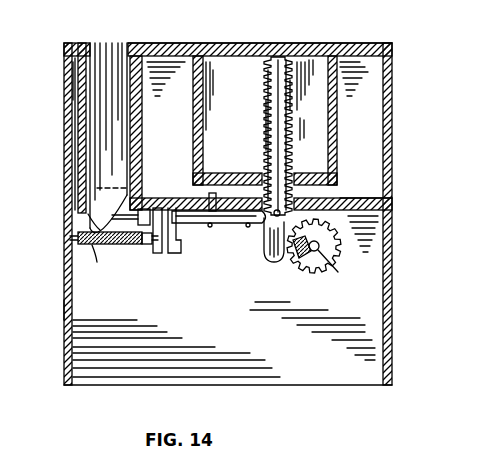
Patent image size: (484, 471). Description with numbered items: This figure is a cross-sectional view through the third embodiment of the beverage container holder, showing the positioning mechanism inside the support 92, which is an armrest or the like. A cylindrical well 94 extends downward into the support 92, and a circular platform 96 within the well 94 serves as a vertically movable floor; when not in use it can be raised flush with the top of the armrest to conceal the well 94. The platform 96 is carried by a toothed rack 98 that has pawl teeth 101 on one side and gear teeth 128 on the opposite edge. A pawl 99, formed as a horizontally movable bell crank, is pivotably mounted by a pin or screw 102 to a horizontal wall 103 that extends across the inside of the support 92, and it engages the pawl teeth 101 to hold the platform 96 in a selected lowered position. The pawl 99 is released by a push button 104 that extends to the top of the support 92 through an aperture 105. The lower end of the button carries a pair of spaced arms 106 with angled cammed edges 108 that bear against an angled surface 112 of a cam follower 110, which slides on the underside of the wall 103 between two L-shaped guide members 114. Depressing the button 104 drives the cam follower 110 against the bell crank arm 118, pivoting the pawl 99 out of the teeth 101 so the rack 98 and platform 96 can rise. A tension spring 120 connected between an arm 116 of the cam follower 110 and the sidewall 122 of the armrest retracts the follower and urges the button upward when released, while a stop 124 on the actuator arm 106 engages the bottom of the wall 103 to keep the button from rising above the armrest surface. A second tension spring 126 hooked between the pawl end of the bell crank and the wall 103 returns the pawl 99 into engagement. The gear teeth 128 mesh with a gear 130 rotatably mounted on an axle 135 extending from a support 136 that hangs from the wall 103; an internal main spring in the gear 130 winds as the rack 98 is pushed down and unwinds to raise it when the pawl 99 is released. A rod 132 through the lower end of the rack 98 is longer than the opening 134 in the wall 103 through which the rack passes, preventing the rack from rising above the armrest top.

The support 92 is at (394, 183).
The well 94 is at (316, 118).
The platform 96 is at (300, 45).
The toothed rack 98 is at (266, 78).
The pawl 99 is at (232, 224).
The pawl teeth 101 is at (268, 122).
The pin or screw 102 is at (195, 225).
The horizontal wall 103 is at (355, 204).
The push button 104 is at (104, 58).
The aperture 105 is at (88, 43).
The spaced arms 106 is at (78, 238).
The angled cammed edges 108 is at (143, 208).
The cam follower 110 is at (171, 208).
The angled surface 112 is at (140, 250).
The L-shaped guide members 114 is at (156, 254).
The arm 116 is at (167, 256).
The bell crank arm 118 is at (180, 253).
The tension spring 120 is at (91, 247).
The sidewall 122 is at (63, 303).
The stop 124 is at (92, 215).
The tension spring 126 is at (262, 252).
The gear teeth 128 is at (290, 92).
The gear 130 is at (330, 262).
The rod 132 is at (305, 135).
The opening 134 is at (263, 162).
The axle 135 is at (297, 262).
The support 136 is at (343, 221).